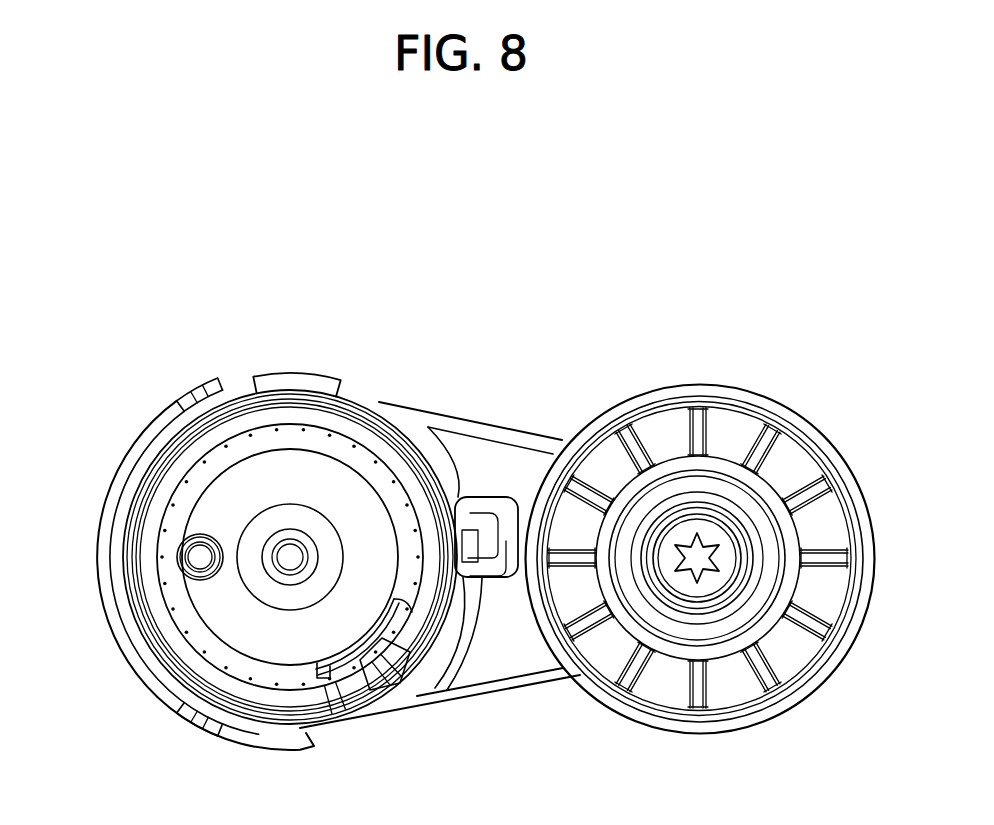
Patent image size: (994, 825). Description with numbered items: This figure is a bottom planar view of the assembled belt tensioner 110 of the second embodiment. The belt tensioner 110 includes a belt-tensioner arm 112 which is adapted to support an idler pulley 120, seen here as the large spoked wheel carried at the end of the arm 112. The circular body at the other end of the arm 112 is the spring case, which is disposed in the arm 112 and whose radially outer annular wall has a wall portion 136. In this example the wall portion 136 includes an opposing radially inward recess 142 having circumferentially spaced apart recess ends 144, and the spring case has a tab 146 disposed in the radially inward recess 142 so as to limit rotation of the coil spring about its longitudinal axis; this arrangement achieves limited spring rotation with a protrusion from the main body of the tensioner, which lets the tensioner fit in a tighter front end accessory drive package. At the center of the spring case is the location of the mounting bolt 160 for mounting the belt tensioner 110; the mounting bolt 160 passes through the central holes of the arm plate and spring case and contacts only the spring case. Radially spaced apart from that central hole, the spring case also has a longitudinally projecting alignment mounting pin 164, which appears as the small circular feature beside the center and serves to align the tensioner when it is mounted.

The belt tensioner 110 is at (338, 480).
The belt-tensioner arm 112 is at (490, 422).
The idler pulley 120 is at (830, 522).
The wall portion 136 is at (347, 663).
The radially inward recess 142 is at (390, 626).
The recess ends 144 is at (327, 667).
The tab 146 is at (387, 667).
The mounting bolt 160 is at (287, 565).
The alignment mounting pin 164 is at (197, 558).